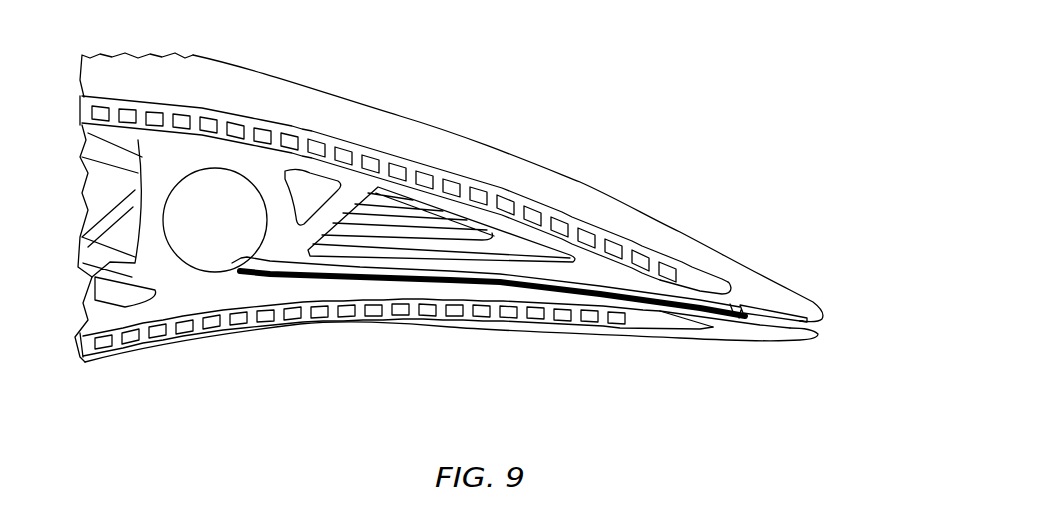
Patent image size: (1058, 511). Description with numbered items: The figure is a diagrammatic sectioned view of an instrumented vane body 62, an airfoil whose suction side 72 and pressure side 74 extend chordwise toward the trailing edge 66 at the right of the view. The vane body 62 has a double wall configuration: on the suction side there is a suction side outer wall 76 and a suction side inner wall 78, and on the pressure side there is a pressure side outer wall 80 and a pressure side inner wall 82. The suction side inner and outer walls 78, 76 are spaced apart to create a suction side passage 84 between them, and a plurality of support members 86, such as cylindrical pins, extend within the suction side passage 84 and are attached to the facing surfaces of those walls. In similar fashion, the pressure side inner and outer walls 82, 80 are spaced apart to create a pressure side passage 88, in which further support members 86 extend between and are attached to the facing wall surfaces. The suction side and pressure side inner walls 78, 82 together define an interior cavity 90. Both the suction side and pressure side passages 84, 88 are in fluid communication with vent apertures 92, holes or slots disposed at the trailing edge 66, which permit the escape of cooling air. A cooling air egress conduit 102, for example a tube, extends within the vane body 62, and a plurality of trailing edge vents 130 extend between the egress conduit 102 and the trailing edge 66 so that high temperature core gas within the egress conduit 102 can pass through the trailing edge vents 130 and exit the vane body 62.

The instrumented vane body 62 is at (727, 142).
The trailing edge 66 is at (840, 327).
The suction side 72 is at (541, 144).
The pressure side 74 is at (548, 355).
The suction side outer wall 76 is at (332, 133).
The suction side inner wall 78 is at (446, 200).
The pressure side outer wall 80 is at (372, 320).
The pressure side inner wall 82 is at (453, 296).
The suction side passage 84 is at (223, 112).
The support members 86 is at (179, 117).
The pressure side passage 88 is at (158, 328).
The interior cavity 90 is at (394, 220).
The vent apertures 92 is at (792, 331).
The cooling air egress conduit 102 is at (241, 170).
The trailing edge vents 130 is at (737, 308).